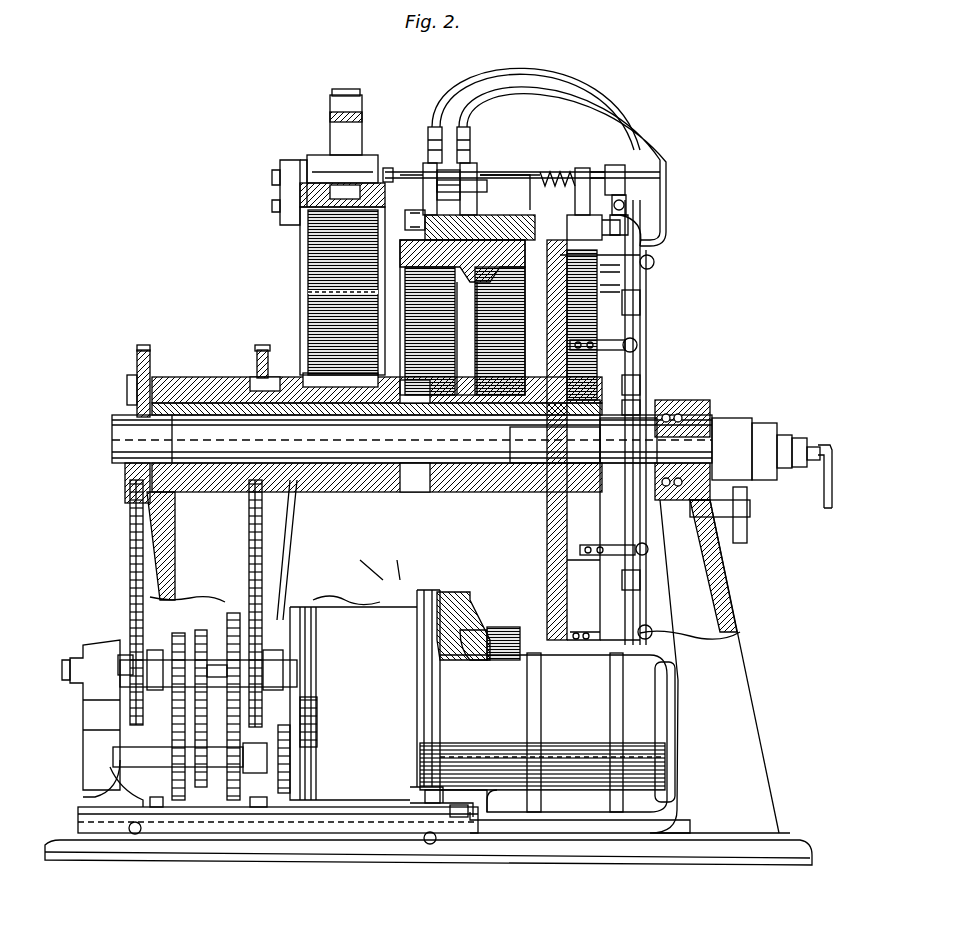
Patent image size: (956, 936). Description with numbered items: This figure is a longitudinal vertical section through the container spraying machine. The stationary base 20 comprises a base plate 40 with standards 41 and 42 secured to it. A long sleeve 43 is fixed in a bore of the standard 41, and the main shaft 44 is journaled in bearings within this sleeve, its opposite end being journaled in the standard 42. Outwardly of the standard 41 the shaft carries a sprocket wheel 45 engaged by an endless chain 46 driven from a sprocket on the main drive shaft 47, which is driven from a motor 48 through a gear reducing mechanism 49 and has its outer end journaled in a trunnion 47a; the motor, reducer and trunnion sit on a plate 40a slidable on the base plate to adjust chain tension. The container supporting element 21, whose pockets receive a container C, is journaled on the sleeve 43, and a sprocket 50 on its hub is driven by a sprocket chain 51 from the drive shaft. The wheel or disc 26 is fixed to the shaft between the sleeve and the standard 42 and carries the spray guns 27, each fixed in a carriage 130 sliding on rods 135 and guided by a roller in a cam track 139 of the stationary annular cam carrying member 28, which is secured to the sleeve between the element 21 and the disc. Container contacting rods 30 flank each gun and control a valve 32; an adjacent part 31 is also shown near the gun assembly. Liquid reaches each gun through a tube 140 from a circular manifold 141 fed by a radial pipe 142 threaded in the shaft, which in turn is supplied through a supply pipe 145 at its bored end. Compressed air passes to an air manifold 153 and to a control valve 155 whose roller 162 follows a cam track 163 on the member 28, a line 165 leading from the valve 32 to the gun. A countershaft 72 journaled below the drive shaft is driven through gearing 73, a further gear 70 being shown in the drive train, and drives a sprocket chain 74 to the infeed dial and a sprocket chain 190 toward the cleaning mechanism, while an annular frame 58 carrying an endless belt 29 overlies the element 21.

The stationary base 20 is at (150, 530).
The container supporting element 21 is at (300, 222).
The wheel or disc 26 is at (642, 318).
The spray gun 27 is at (467, 166).
The annular cam carrying member 28 is at (400, 262).
The endless belt 29 is at (345, 160).
The container contacting rod 30 is at (402, 170).
The bracket 31 is at (630, 172).
The control valve 32 is at (630, 200).
The base plate 40 is at (352, 858).
The plate 40a is at (340, 802).
The standard 41 is at (130, 573).
The standard 42 is at (566, 627).
The sleeve 43 is at (203, 392).
The main shaft 44 is at (114, 436).
The sprocket wheel 45 is at (136, 360).
The endless chain 46 is at (134, 606).
The main drive shaft 47 is at (76, 662).
The trunnion 47a is at (95, 720).
The motor 48 is at (555, 743).
The gear reducing mechanism 49 is at (365, 680).
The sprocket 50 is at (263, 352).
The sprocket chain 51 is at (249, 561).
The annular frame 58 is at (345, 94).
The gear 70 is at (233, 802).
The countershaft 72 is at (118, 763).
The gearing 73 is at (178, 802).
The sprocket chain 74 is at (210, 620).
The carriage 130 is at (472, 188).
The rod 135 is at (572, 180).
The cam track 139 is at (425, 218).
The tube 140 is at (470, 82).
The manifold 141 is at (655, 262).
The pipe 142 is at (650, 552).
The supply pipe 145 is at (822, 495).
The air manifold 153 is at (640, 347).
The control valve 155 is at (604, 230).
The roller 162 is at (602, 269).
The cam track 163 is at (609, 287).
The line 165 is at (566, 126).
The sprocket chain 190 is at (284, 795).
The container C is at (318, 150).